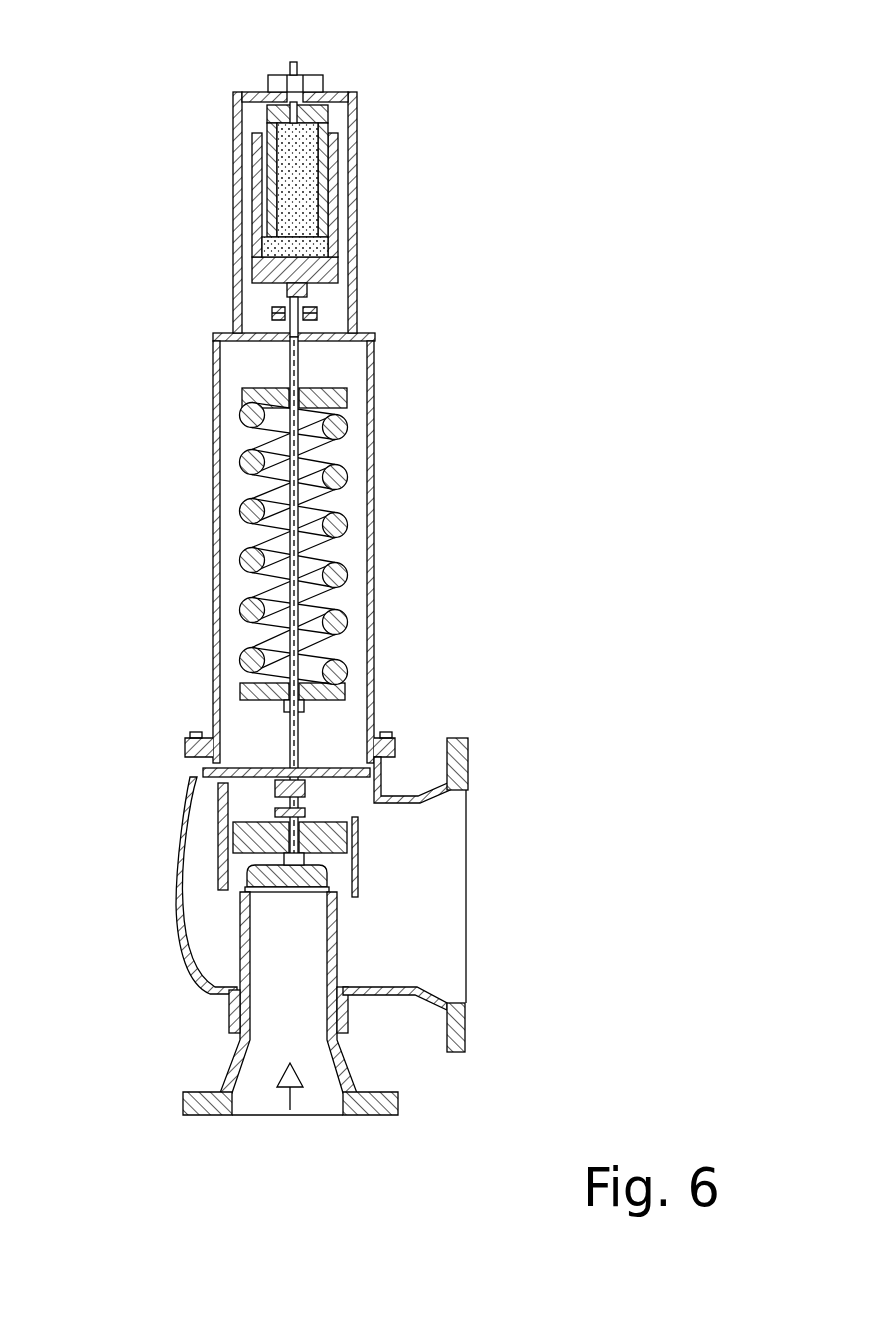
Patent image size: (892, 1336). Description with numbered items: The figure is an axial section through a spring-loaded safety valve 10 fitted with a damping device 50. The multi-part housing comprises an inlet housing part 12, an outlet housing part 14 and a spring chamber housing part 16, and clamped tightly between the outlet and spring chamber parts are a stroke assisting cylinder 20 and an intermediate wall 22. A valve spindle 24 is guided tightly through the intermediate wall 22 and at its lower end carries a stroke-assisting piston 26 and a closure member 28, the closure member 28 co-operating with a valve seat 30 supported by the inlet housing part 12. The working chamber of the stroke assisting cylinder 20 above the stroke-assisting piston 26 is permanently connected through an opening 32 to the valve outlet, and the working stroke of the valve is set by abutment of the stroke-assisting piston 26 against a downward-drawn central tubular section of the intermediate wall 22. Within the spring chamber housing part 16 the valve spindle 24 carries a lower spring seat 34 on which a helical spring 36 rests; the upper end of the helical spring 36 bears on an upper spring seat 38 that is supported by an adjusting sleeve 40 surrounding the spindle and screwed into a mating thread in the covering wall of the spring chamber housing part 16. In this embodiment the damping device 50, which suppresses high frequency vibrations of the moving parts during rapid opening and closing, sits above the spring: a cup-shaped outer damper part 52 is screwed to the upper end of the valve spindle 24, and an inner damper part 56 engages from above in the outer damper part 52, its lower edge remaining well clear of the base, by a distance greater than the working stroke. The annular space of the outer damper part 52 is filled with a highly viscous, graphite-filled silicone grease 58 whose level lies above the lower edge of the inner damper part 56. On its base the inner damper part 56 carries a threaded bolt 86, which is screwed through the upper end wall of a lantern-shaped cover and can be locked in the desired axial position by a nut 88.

The spring-loaded safety valve 10 is at (198, 418).
The inlet housing part 12 is at (240, 1050).
The outlet housing part 14 is at (181, 925).
The spring chamber housing part 16 is at (373, 345).
The stroke assisting cylinder 20 is at (358, 843).
The intermediate wall 22 is at (200, 773).
The valve spindle 24 is at (300, 718).
The stroke-assisting piston 26 is at (233, 838).
The closure member 28 is at (358, 875).
The valve seat 30 is at (330, 890).
The opening 32 is at (358, 815).
The spring seat 34 is at (345, 693).
The helical spring 36 is at (347, 432).
The spring seat 38 is at (347, 398).
The adjusting sleeve 40 is at (355, 300).
The damping device 50 is at (402, 211).
The outer damper part 52 is at (240, 205).
The inner damper part 56 is at (250, 121).
The silicone grease 58 is at (254, 242).
The threaded bolt 86 is at (299, 62).
The nut 88 is at (324, 82).